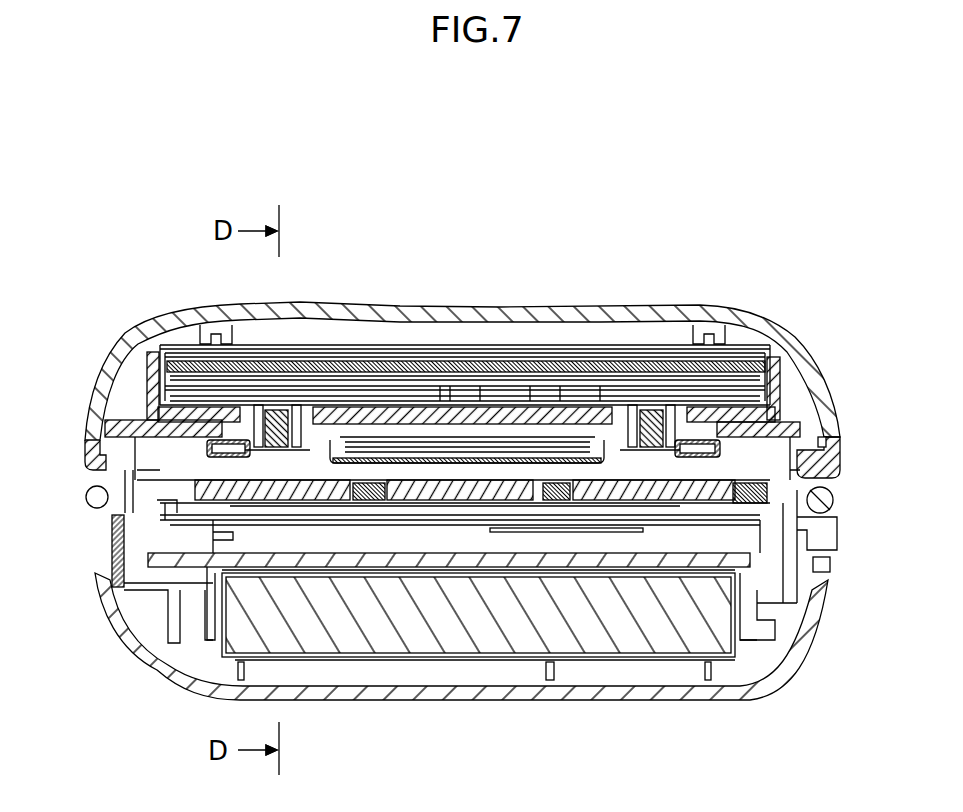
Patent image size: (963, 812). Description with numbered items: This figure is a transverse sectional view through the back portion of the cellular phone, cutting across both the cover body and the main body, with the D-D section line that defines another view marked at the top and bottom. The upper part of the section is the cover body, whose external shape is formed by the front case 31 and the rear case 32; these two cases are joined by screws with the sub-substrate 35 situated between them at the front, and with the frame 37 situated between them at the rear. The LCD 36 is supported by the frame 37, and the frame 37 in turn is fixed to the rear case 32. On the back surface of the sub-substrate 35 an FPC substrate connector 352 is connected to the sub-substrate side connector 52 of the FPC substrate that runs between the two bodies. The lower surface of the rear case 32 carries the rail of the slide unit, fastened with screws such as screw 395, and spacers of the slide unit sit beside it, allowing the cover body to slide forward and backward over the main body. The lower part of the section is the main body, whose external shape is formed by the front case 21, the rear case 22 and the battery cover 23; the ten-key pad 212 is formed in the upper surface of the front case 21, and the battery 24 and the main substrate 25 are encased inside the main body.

The front case 31 is at (797, 350).
The rear case 32 is at (827, 460).
The sub-substrate 35 is at (747, 413).
The LCD 36 is at (337, 360).
The frame 37 is at (505, 397).
The sub-substrate side connector 52 is at (460, 480).
The FPC substrate connector 352 is at (540, 425).
The screw 395 is at (653, 410).
The ten-key pad 212 is at (733, 480).
The front case 21 is at (833, 498).
The rear case 22 is at (830, 567).
The battery cover 23 is at (810, 633).
The battery 24 is at (520, 637).
The main substrate 25 is at (360, 570).